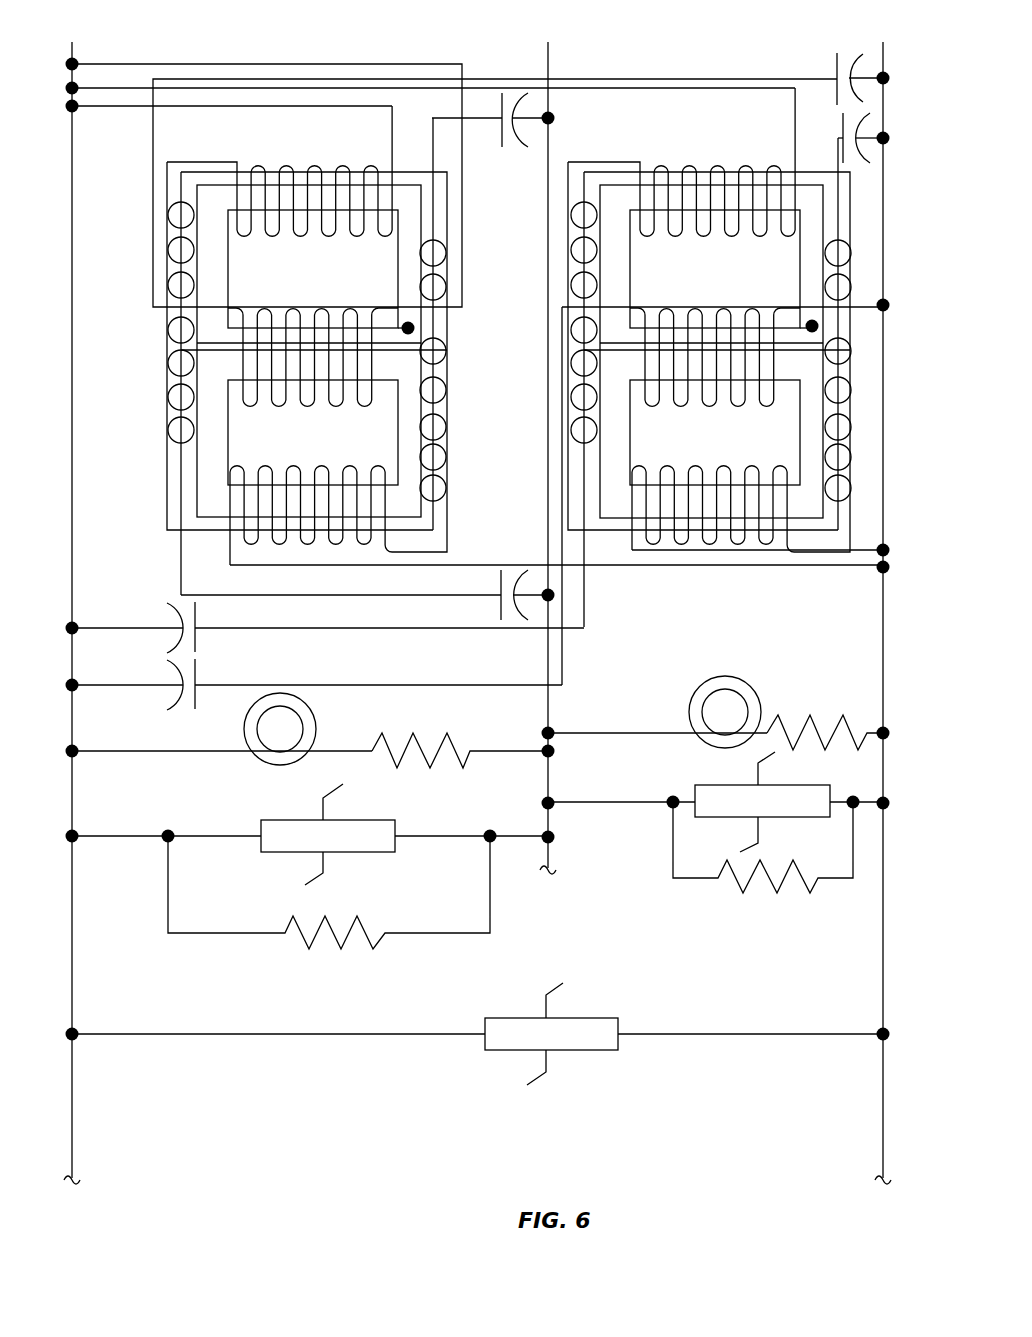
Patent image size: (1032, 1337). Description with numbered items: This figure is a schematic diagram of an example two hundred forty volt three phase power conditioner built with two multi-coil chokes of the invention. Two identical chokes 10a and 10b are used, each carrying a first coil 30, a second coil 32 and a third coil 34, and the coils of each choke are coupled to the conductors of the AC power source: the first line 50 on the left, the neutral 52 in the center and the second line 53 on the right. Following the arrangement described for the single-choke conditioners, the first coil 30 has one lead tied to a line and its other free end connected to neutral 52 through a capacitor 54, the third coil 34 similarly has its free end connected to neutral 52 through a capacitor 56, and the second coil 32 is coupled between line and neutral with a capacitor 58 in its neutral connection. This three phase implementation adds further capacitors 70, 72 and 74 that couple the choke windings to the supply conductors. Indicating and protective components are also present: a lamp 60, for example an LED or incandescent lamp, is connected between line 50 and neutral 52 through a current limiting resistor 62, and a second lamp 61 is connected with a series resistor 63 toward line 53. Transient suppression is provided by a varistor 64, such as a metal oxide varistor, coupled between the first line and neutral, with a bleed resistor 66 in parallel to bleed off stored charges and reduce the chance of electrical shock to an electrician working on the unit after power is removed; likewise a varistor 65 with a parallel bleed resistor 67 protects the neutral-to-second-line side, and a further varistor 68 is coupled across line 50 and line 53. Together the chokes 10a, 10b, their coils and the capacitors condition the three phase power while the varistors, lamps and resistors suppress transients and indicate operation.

The choke 10a is at (139, 502).
The choke 10b is at (728, 140).
The first coil 30 is at (313, 165).
The second coil 32 is at (325, 307).
The third coil 34 is at (325, 465).
The line 50 is at (74, 345).
The neutral 52 is at (545, 238).
The line 53 is at (880, 262).
The capacitor 54 is at (500, 135).
The capacitor 56 is at (500, 570).
The capacitor 58 is at (835, 70).
The lamp 60 is at (315, 728).
The lamp 61 is at (755, 712).
The current limiting resistor 62 is at (452, 742).
The series resistor 63 is at (810, 718).
The varistor 64 is at (383, 818).
The varistor 65 is at (805, 785).
The bleed resistor 66 is at (336, 943).
The bleed resistor 67 is at (770, 888).
The varistor 68 is at (597, 1018).
The capacitor 70 is at (199, 620).
The capacitor 72 is at (199, 677).
The capacitor 74 is at (843, 128).